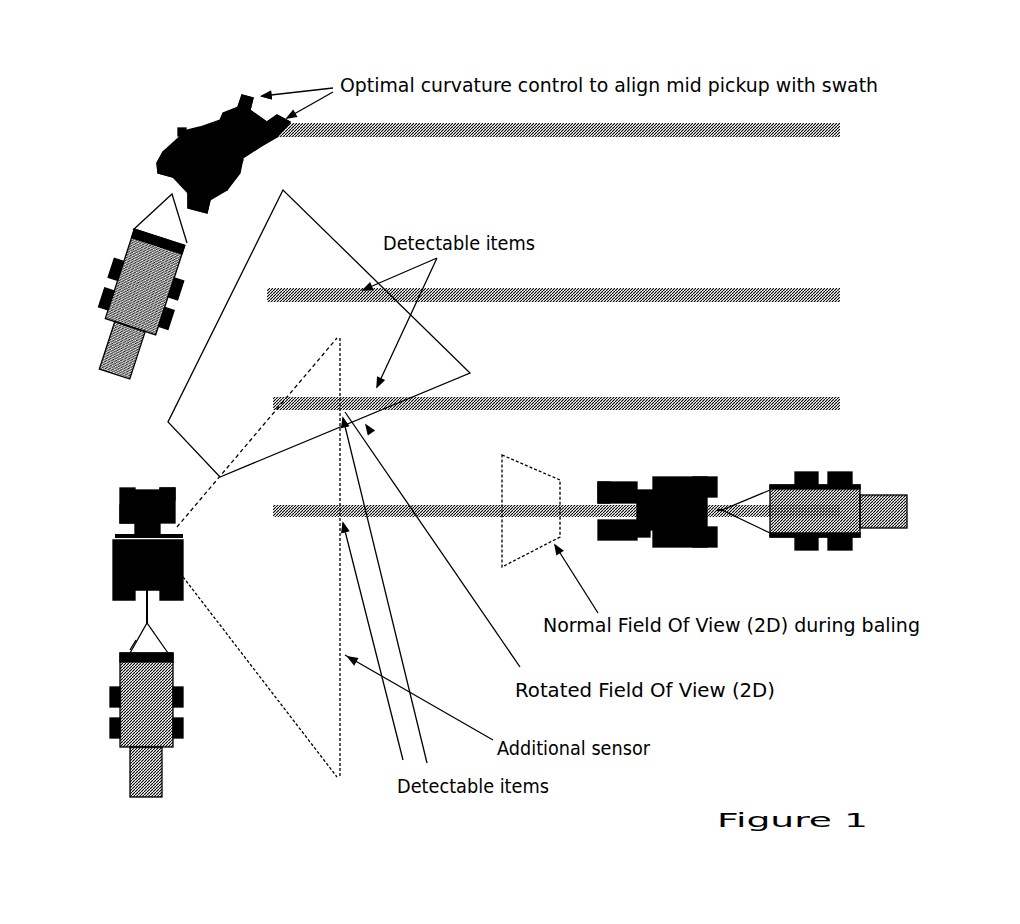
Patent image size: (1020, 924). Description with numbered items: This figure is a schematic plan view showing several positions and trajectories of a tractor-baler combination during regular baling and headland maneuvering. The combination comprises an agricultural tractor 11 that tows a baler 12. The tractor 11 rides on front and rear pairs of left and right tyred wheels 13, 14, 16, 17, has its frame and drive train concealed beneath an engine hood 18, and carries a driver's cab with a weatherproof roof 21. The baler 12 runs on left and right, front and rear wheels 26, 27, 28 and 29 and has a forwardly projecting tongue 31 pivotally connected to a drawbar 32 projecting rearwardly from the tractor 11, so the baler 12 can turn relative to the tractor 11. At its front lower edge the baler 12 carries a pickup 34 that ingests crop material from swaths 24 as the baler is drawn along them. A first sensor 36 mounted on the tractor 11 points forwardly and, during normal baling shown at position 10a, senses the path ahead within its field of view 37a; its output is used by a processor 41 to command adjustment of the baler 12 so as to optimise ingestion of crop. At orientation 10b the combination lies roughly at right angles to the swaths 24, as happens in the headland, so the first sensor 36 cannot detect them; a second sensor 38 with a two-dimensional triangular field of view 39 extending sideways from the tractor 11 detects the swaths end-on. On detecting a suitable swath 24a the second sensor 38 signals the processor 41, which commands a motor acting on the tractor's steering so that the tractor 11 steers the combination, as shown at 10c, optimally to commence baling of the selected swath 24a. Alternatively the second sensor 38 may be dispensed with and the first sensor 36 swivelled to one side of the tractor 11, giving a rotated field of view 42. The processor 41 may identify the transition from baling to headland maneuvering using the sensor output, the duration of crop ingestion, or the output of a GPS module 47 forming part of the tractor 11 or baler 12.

The position of tractor-baler combination 10a is at (755, 468).
The orientation of tractor-baler combination 10b is at (78, 640).
The steering representation of tractor-baler combination 10c is at (130, 115).
The agricultural tractor 11 is at (273, 132).
The baler 12 is at (160, 335).
The tyred wheel 13 is at (230, 105).
The tyred wheel 14 is at (255, 157).
The tyred wheel 16 is at (155, 150).
The tyred wheel 17 is at (207, 208).
The engine hood 18 is at (262, 108).
The weatherproof roof 21 is at (183, 133).
The swath 24 is at (840, 291).
The selected swath 24a is at (840, 126).
The baler wheel 26 is at (110, 697).
The baler wheel 27 is at (183, 690).
The baler wheel 28 is at (110, 740).
The baler wheel 29 is at (183, 730).
The tongue 31 is at (160, 640).
The drawbar 32 is at (150, 607).
The pickup 34 is at (133, 648).
The first sensor 36 is at (153, 488).
The field of view 37a is at (522, 462).
The second sensor 38 is at (183, 552).
The field of view of second sensor 39 is at (300, 735).
The processor 41 is at (115, 520).
The rotated field of view 42 is at (333, 238).
The GPS module 47 is at (243, 163).